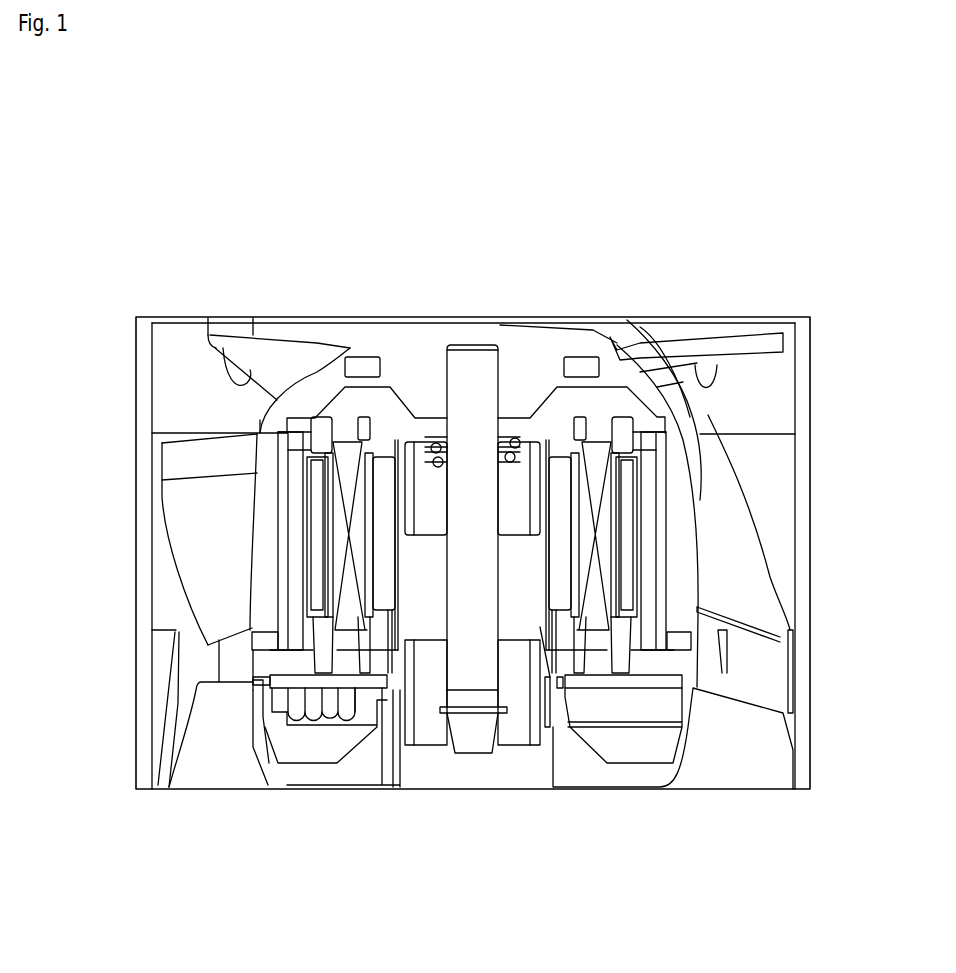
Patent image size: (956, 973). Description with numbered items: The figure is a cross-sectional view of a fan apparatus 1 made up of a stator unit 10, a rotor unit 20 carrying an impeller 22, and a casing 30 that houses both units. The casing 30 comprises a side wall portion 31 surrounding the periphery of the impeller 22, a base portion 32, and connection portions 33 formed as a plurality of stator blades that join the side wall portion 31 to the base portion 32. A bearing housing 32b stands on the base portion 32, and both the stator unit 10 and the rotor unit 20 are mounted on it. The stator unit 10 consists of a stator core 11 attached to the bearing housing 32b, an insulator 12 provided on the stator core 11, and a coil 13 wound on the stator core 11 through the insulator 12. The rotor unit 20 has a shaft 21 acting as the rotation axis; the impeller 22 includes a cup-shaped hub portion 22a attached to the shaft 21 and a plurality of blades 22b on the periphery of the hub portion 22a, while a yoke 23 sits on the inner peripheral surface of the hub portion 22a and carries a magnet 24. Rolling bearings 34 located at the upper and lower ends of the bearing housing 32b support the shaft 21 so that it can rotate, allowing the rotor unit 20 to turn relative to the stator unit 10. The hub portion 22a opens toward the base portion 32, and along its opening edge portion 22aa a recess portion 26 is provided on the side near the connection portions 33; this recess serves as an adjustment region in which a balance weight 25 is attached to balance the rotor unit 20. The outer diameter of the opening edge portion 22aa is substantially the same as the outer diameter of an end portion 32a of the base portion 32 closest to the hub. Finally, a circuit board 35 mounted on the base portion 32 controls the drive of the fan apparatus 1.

The fan apparatus 1 is at (389, 104).
The stator unit 10 is at (402, 250).
The stator core 11 is at (385, 456).
The insulator 12 is at (318, 432).
The coil 13 is at (345, 440).
The rotor unit 20 is at (777, 193).
The shaft 21 is at (466, 367).
The impeller 22 is at (598, 250).
The hub portion 22a is at (545, 342).
The blades 22b is at (640, 350).
The opening edge portion 22aa is at (246, 655).
The yoke 23 is at (708, 415).
The magnet 24 is at (650, 520).
The balance weight 25 is at (268, 670).
The recess portion 26 is at (252, 620).
The casing 30 is at (758, 855).
The side wall portion 31 is at (803, 657).
The base portion 32 is at (613, 788).
The end portion 32a is at (678, 678).
The bearing housing 32b is at (555, 687).
The connection portions 33 is at (733, 687).
The rolling bearings 34 is at (425, 693).
The circuit board 35 is at (337, 683).